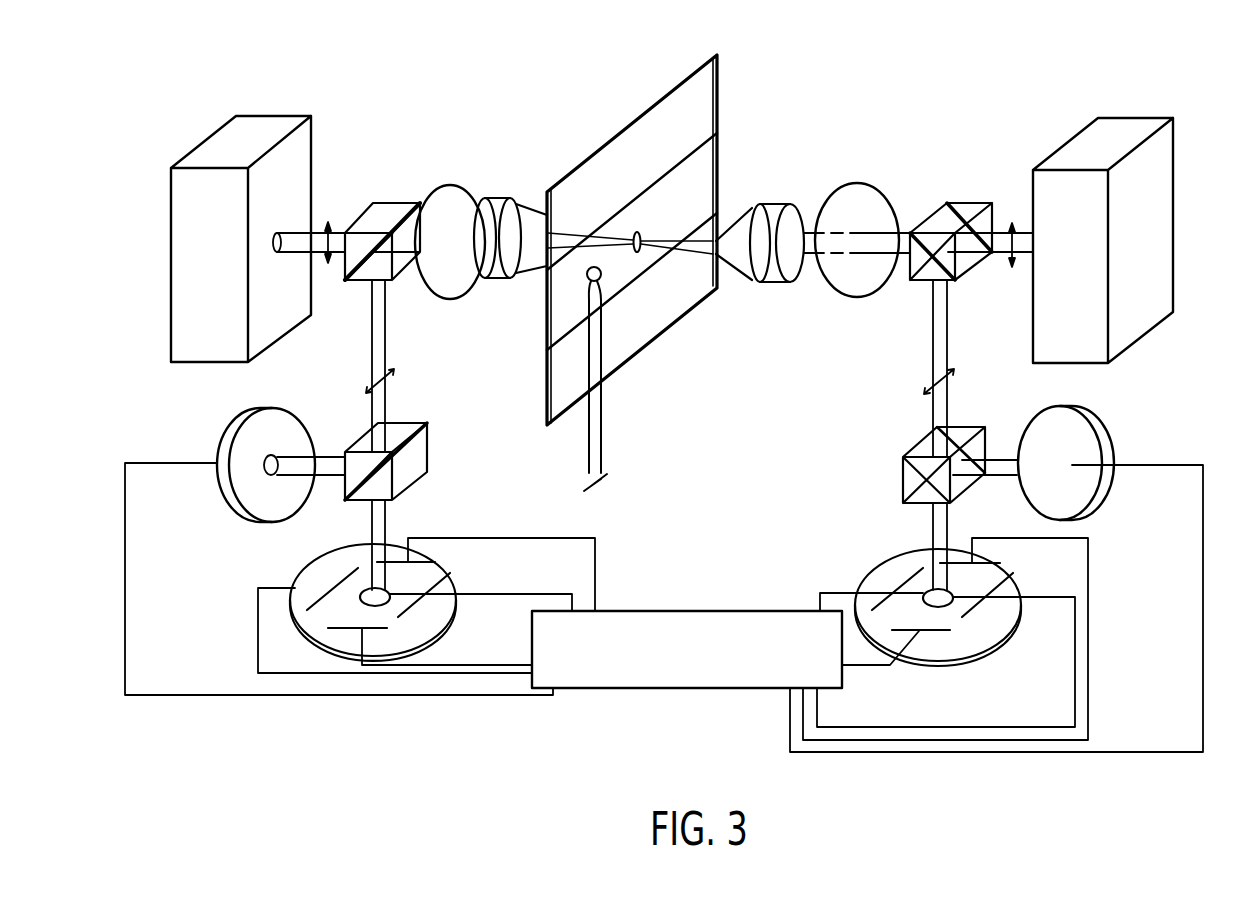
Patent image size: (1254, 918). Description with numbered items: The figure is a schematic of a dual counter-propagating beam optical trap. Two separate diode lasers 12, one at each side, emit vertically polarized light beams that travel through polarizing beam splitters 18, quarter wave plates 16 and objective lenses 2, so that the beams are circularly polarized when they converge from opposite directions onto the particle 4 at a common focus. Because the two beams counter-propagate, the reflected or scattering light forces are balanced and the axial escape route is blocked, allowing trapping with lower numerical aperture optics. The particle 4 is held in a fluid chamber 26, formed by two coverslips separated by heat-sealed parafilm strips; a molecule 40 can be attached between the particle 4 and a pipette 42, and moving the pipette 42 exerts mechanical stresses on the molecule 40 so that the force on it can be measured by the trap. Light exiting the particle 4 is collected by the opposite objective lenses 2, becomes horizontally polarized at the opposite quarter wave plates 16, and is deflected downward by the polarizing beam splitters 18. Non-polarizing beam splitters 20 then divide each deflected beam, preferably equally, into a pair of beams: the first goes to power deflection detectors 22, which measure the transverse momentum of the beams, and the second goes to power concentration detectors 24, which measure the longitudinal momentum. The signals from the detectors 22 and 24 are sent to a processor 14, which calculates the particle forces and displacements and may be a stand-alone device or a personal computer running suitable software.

The diode laser 12 is at (263, 122).
The polarizing beam splitter 18 is at (382, 207).
The quarter wave plate 16 is at (452, 205).
The objective lens 2 is at (497, 207).
The fluid chamber 26 is at (713, 123).
The particle 4 is at (642, 238).
The molecule 40 is at (601, 268).
The pipette 42 is at (602, 407).
The non-polarizing beam splitter 20 is at (428, 430).
The power concentration detector 24 is at (217, 487).
The power deflection detector 22 is at (302, 567).
The processor 14 is at (684, 644).